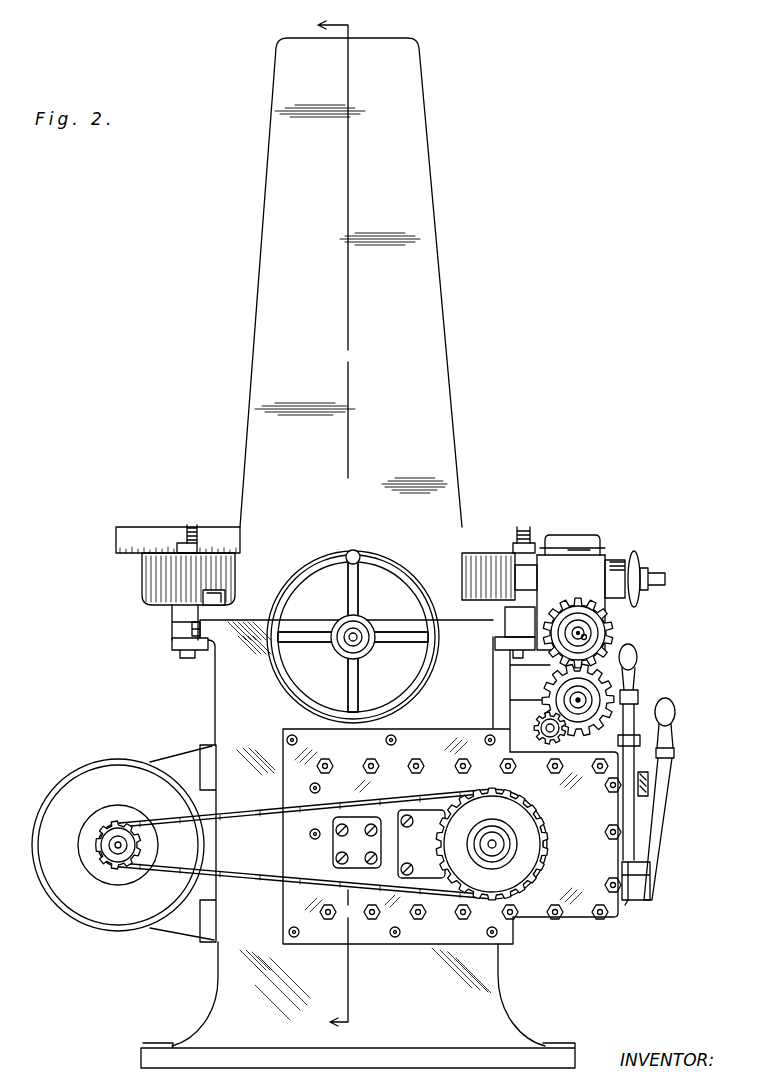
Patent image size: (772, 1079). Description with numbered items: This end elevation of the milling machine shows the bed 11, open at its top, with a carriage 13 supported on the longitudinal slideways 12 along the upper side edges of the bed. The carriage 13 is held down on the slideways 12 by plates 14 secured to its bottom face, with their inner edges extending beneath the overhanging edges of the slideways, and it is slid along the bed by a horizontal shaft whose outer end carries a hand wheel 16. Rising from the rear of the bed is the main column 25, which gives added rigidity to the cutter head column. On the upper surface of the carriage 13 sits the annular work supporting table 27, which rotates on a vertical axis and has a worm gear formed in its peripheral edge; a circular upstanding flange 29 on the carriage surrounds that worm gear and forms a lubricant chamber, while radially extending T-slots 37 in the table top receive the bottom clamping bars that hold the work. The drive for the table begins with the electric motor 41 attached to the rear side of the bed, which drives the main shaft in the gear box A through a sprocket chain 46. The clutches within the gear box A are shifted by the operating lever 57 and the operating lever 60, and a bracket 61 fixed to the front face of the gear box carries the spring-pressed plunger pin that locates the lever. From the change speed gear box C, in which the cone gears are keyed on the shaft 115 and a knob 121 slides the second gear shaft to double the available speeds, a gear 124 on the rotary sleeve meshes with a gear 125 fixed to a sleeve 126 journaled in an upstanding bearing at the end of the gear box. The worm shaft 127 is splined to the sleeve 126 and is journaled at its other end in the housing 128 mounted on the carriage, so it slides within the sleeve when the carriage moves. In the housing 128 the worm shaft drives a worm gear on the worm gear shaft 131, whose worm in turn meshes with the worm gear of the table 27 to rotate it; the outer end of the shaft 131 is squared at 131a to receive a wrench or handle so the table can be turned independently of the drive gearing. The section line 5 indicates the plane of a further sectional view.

The section line 5- 5 is at (319, 530).
The main column 25 is at (425, 200).
The annular work supporting table 27 is at (130, 527).
The T-slots 37 is at (192, 525).
The circular upstanding flange 29 is at (160, 580).
The carriage 13 is at (172, 617).
The longitudinal slideways 12 is at (190, 630).
The plates 14 is at (178, 643).
The bed 11 is at (232, 688).
The hand wheel 16 is at (398, 575).
The worm gear shaft 131 is at (492, 565).
The housing 128 is at (590, 570).
The squared end 131a is at (668, 580).
The sleeve 126 is at (575, 618).
The worm shaft 127 is at (590, 636).
The gear 125 is at (610, 620).
The change speed gear box C is at (605, 655).
The gear 124 is at (600, 688).
The knob 121 is at (598, 712).
The shaft 115 is at (545, 733).
The operating lever 60 is at (640, 712).
The operating lever 57 is at (655, 828).
The bracket 61 is at (636, 868).
The gear box A is at (633, 911).
The sprocket chain 46 is at (232, 872).
The electric motor 41 is at (75, 905).